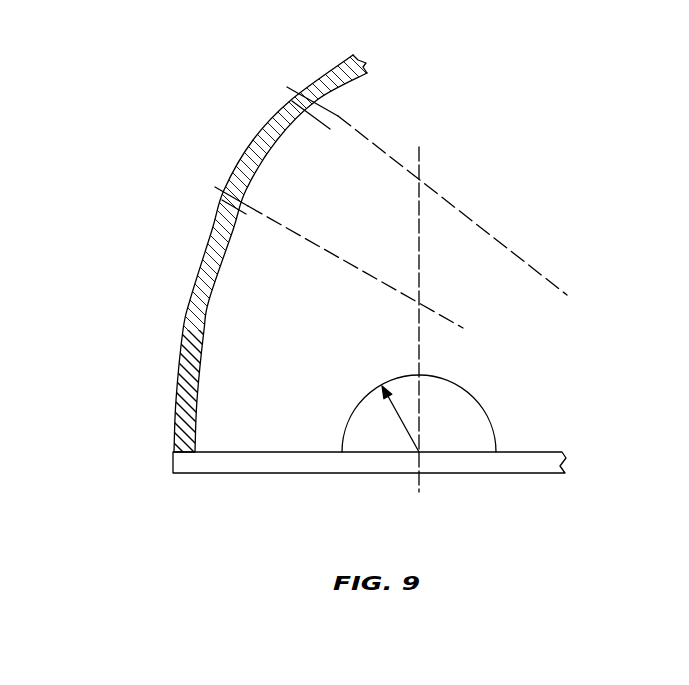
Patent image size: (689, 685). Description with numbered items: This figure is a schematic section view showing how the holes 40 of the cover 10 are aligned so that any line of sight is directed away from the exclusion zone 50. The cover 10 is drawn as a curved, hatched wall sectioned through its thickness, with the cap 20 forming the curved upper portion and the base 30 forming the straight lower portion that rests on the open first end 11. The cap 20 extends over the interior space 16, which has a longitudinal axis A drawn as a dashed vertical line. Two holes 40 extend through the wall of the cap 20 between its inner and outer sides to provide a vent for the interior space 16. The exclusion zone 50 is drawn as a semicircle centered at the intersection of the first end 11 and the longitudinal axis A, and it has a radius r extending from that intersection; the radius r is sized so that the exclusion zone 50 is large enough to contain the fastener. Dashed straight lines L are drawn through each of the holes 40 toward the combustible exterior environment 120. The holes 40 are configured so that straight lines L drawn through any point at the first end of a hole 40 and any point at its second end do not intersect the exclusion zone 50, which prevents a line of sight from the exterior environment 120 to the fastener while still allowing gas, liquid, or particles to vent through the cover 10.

The combustible exterior environment 120 is at (217, 34).
The cover 10 is at (126, 128).
The cap 20 is at (190, 301).
The base 30 is at (177, 412).
The interior space 16 is at (372, 110).
The holes 40 is at (292, 102).
The first end 11 is at (278, 453).
The exclusion zone 50 is at (437, 430).
The radius r is at (400, 421).
The longitudinal axis A is at (420, 162).
The straight lines L is at (492, 237).